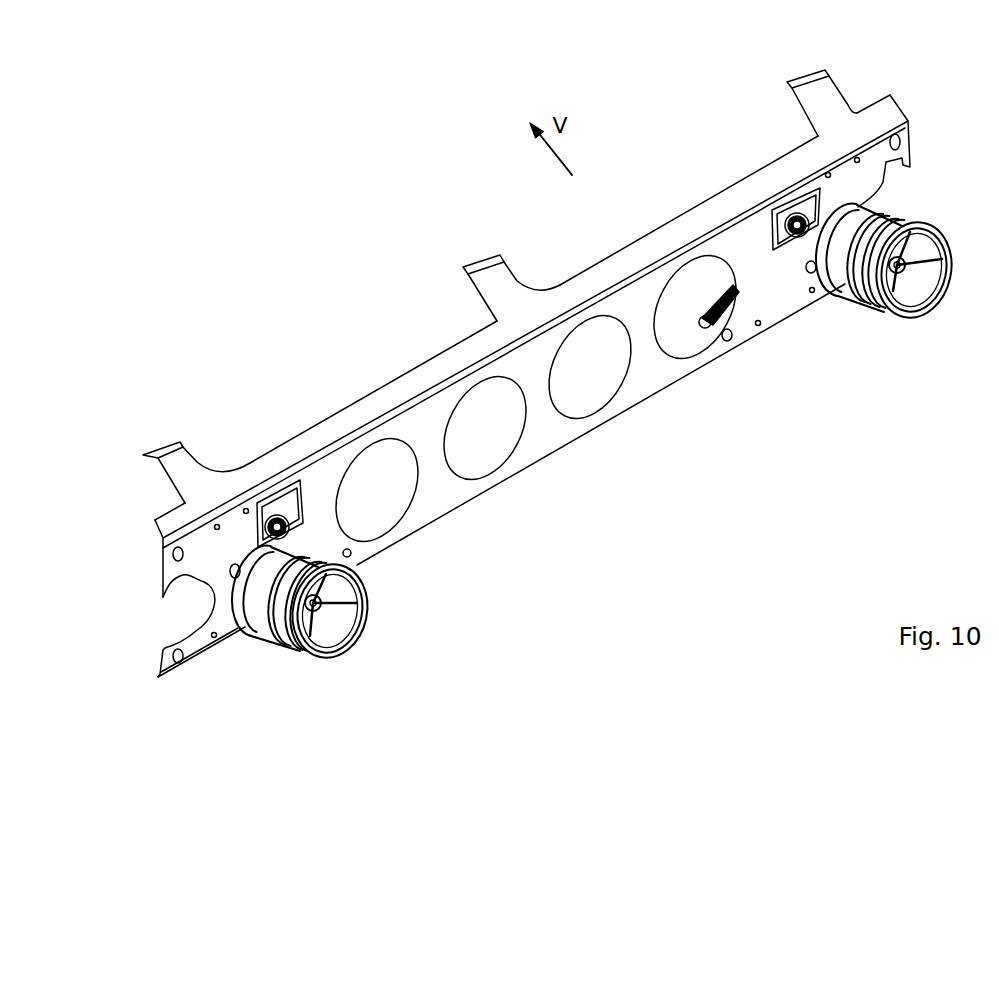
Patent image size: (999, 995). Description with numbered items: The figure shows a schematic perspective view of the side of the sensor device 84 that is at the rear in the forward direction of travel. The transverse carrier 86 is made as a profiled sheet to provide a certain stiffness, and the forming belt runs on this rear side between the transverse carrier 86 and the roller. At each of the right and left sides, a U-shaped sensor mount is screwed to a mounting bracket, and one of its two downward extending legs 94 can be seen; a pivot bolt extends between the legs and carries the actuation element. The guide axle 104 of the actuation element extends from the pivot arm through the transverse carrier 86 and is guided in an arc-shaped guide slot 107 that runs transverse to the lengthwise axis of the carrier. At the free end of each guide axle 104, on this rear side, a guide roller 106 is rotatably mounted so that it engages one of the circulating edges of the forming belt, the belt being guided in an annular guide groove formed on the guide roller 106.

The sensor device 84 is at (582, 487).
The transverse carrier 86 is at (175, 521).
The leg 94 is at (292, 512).
The guide axle 104 is at (330, 652).
The guide roller 106 is at (264, 639).
The guide slot 107 is at (235, 564).